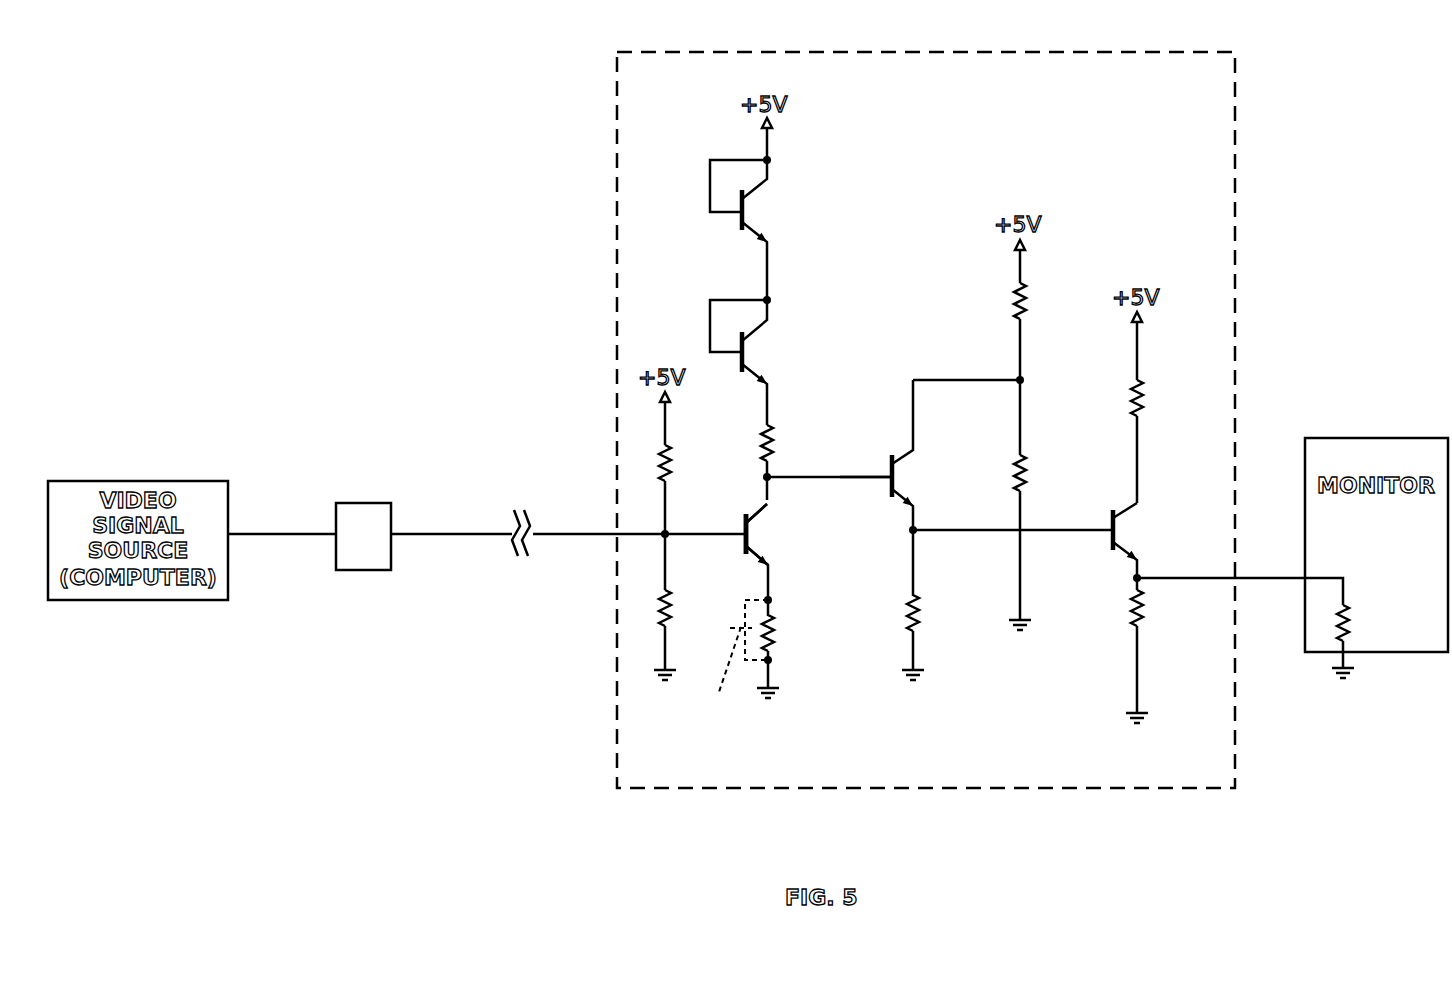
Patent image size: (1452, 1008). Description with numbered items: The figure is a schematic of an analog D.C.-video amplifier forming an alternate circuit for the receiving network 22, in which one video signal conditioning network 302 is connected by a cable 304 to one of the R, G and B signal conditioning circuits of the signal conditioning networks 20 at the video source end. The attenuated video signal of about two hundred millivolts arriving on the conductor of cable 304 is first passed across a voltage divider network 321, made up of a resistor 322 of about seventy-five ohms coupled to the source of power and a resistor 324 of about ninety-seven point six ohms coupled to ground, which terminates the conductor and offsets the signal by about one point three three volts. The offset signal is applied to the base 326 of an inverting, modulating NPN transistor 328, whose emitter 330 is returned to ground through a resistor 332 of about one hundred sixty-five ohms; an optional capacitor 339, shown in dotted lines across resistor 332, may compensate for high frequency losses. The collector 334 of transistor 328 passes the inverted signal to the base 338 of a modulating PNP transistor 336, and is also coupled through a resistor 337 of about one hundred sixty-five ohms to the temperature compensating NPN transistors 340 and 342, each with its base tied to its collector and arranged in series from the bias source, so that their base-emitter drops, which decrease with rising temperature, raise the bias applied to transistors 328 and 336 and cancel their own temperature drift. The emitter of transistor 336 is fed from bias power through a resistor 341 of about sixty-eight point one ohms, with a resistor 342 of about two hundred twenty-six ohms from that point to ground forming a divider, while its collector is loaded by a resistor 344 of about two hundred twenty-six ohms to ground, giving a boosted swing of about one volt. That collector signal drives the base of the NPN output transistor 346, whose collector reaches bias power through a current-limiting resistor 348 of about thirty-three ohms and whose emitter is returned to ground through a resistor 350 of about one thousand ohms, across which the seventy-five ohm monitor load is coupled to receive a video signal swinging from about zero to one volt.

The signal conditioning network 20 is at (363, 536).
The network 22 is at (670, 100).
The video signal conditioning network 302 is at (1028, 114).
The cable 304 is at (482, 505).
The voltage divider network 321 is at (710, 561).
The resistor 322 is at (669, 462).
The resistor 324 is at (660, 604).
The base 326 is at (742, 530).
The inverting, modulating NPN transistor 328 is at (781, 531).
The emitter 330 is at (762, 557).
The resistor 332 is at (786, 630).
The collector 334 is at (778, 520).
The modulating PNP transistor 336 is at (906, 477).
The resistor 337 is at (773, 442).
The base 338 is at (888, 476).
The capacitor 339 is at (729, 661).
The temperature compensating NPN transistor 340 is at (780, 349).
The resistor 341 is at (1015, 302).
The temperature compensating NPN transistor / resistor 342 is at (780, 206).
The resistor 344 is at (922, 613).
The NPN output transistor 346 is at (1131, 532).
The current-limiting resistor 348 is at (1143, 394).
The resistor 350 is at (1130, 612).